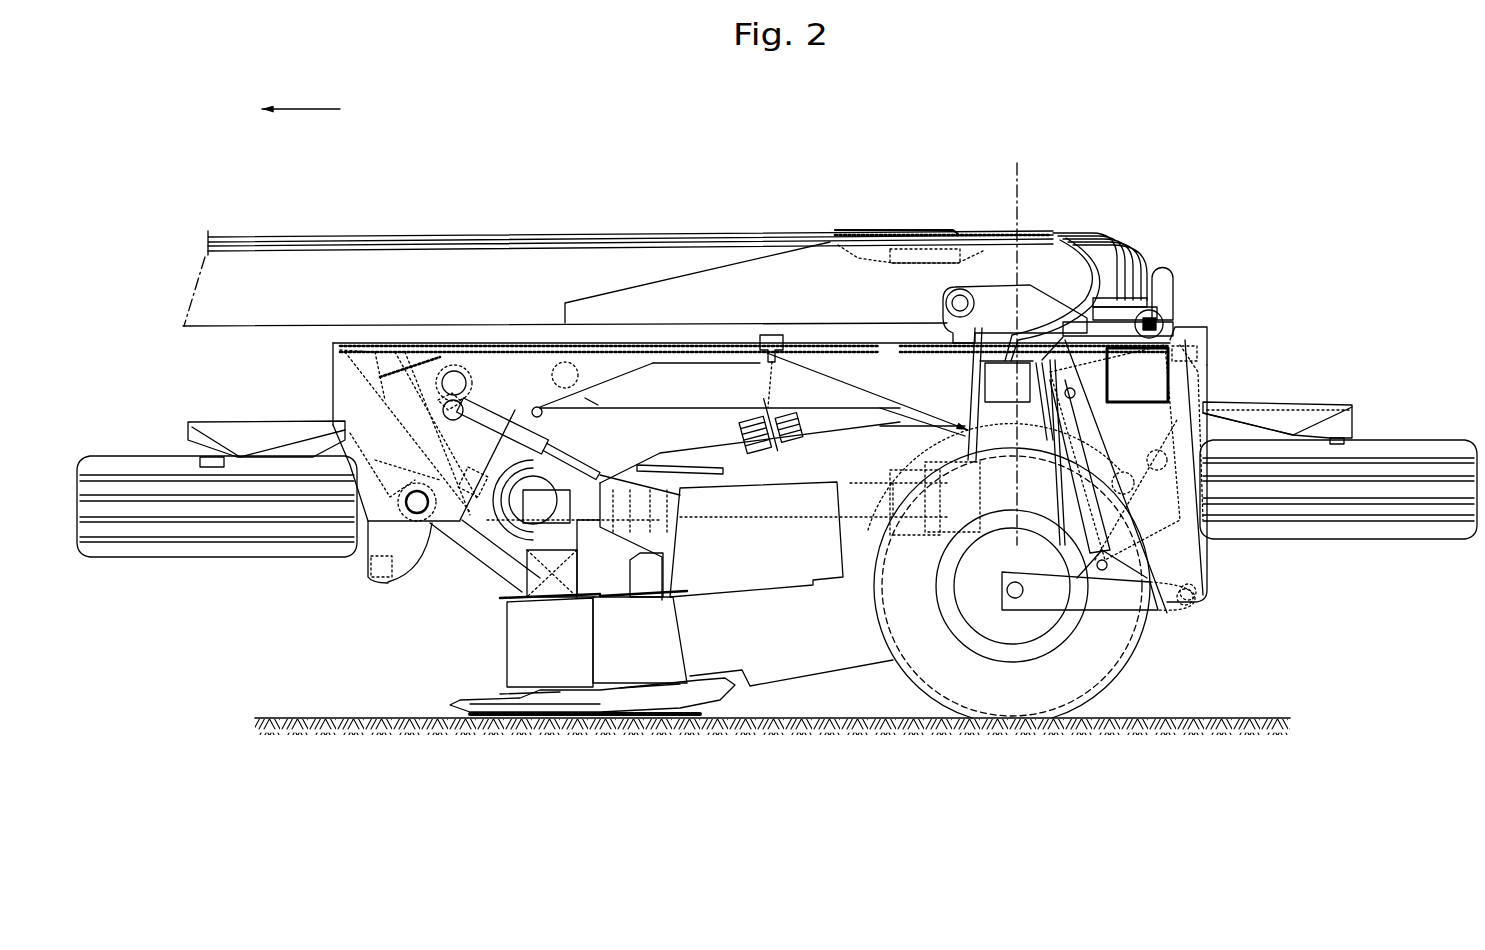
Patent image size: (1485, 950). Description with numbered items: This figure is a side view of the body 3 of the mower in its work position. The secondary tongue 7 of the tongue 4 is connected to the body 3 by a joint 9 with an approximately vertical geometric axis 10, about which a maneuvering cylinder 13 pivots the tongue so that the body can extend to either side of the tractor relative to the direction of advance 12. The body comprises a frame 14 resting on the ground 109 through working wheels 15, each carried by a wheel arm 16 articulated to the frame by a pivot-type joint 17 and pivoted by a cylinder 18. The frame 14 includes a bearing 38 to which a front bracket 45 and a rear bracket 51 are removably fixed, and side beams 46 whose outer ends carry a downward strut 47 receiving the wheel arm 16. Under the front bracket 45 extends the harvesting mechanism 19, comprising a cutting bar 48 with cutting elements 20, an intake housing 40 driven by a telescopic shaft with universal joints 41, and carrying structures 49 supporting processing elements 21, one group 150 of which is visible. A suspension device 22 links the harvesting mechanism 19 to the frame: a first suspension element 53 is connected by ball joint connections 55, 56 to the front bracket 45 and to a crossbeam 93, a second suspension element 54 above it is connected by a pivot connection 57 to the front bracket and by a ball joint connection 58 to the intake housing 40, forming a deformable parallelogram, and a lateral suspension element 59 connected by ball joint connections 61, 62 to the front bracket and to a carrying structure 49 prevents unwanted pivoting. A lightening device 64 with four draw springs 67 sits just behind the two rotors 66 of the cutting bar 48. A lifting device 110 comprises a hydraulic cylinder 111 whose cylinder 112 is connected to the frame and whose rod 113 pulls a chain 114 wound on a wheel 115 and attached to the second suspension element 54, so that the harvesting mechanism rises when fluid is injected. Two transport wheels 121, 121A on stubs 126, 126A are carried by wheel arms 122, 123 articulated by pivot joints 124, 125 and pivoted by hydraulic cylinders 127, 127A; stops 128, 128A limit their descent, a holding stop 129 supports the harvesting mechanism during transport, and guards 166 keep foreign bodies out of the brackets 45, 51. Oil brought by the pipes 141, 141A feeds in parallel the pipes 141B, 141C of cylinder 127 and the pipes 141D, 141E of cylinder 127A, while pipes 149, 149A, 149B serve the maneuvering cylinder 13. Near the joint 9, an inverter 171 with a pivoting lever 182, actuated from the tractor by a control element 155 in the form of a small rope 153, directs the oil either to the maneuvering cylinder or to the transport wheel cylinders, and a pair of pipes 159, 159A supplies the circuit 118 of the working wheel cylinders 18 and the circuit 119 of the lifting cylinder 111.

The body 3 is at (330, 658).
The tongue 4 is at (216, 328).
The secondary tongue 7 is at (254, 318).
The joint 9 is at (1064, 237).
The geometric axis 10 is at (1020, 162).
The direction of advance 12 is at (330, 108).
The maneuvering cylinder 13 is at (1166, 316).
The frame 14 is at (1198, 324).
The working wheel 15 is at (1135, 652).
The wheel arm 16 is at (1163, 610).
The pivot-type joint 17 is at (1196, 598).
The cylinder 18 is at (1112, 545).
The harvesting mechanism 19 is at (448, 622).
The cutting elements 20 is at (532, 708).
The processing elements 21 is at (852, 655).
The suspension device 22 is at (458, 549).
The bearing 38 is at (988, 413).
The intake housing 40 is at (486, 472).
The telescopic shaft with universal joints 41 is at (765, 516).
The front bracket 45 is at (333, 396).
The beam 46 is at (1207, 396).
The strut 47 is at (1208, 562).
The cutting bar 48 is at (590, 718).
The carrying structure 49 is at (584, 515).
The rear bracket 51 is at (1203, 378).
The first suspension element 53 is at (480, 562).
The second suspension element 54 is at (572, 447).
The ball joint connection 55 is at (430, 490).
The ball joint connection 56 is at (520, 592).
The pivot connection 57 is at (466, 381).
The ball joint connection 58 is at (600, 462).
The lateral suspension element 59 is at (503, 424).
The ball joint connection 61 is at (444, 382).
The ball joint connection 62 is at (531, 500).
The lightening device 64 is at (800, 423).
The rotors 66 is at (605, 651).
The draw springs 67 is at (780, 445).
The crossbeam 93 is at (576, 568).
The ground 109 is at (384, 735).
The lifting device 110 is at (698, 344).
The hydraulic cylinder 111 is at (703, 358).
The cylinder 112 is at (742, 360).
The rod 113 is at (618, 352).
The chain 114 is at (542, 412).
The wheel 115 is at (598, 405).
The circuit 118 is at (1040, 388).
The circuit 119 is at (858, 370).
The transport wheel 121 is at (197, 556).
The transport wheel 121A is at (1316, 538).
The wheel arm 122 is at (368, 566).
The wheel arm 123 is at (1350, 426).
The pivot-type joint 124 is at (513, 534).
The pivot-type joint 125 is at (1140, 512).
The stub 126 is at (205, 462).
The stub 126A is at (1345, 442).
The hydraulic cylinder 127 is at (333, 370).
The hydraulic cylinder 127A is at (1205, 346).
The stop 128 is at (492, 427).
The stop 128A is at (1062, 440).
The holding stop 129 is at (380, 590).
The pipe 141 is at (1112, 240).
The pipe 141A is at (1121, 242).
The pipe 141B is at (390, 345).
The pipe 141C is at (430, 345).
The pipe 141D is at (1208, 326).
The pipe 141E is at (1044, 396).
The pipe 149 is at (1130, 243).
The pipe 149A is at (1174, 280).
The pipe 149B is at (1163, 268).
The group of processing elements 150 is at (796, 634).
The small rope 153 is at (640, 236).
The control element 155 is at (706, 230).
The pipe 159 is at (1040, 370).
The pipe 159A is at (1068, 306).
The guard 166 is at (196, 422).
The inverter 171 is at (898, 236).
The pivoting lever 182 is at (952, 236).